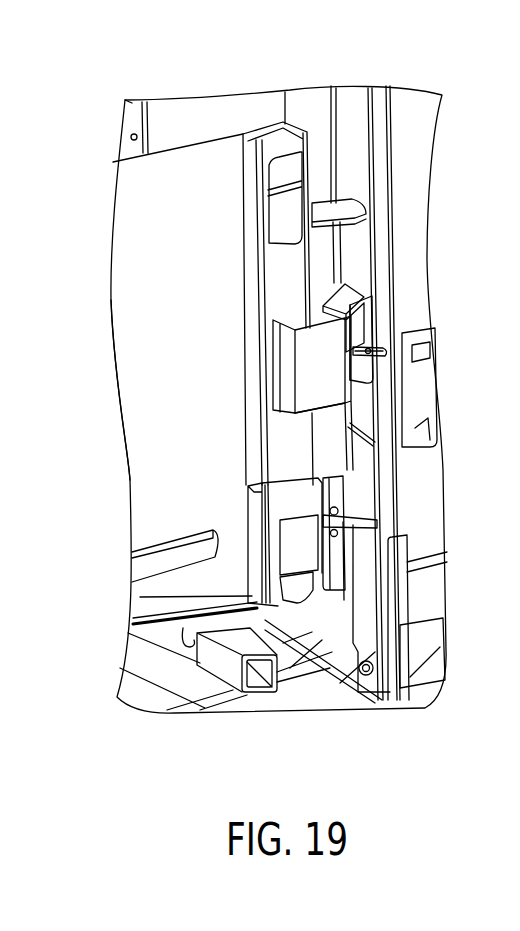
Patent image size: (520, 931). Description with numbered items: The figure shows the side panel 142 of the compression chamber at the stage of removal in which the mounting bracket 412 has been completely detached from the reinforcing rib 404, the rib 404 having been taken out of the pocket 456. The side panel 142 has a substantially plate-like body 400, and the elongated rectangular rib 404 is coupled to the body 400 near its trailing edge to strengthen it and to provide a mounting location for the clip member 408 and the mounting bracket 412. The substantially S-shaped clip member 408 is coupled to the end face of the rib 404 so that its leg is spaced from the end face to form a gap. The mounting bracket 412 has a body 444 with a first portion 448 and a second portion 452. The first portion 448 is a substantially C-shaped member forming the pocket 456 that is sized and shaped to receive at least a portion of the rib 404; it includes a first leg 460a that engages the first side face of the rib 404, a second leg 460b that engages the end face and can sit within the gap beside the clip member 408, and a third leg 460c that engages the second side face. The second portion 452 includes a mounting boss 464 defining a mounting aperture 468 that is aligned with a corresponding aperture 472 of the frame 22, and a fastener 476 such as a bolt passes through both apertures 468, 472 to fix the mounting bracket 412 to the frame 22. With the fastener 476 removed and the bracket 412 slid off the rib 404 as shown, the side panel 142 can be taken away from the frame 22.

The frame 22 is at (415, 186).
The side panel 142 is at (164, 190).
The body 400 is at (140, 222).
The reinforcing rib 404 is at (280, 258).
The clip member 408 is at (286, 164).
The mounting bracket 412 is at (285, 392).
The body 444 is at (273, 338).
The first portion 448 is at (433, 446).
The second portion 452 is at (362, 318).
The pocket 456 is at (286, 312).
The first leg 460a is at (283, 356).
The second leg 460b is at (310, 416).
The third leg 460c is at (360, 299).
The mounting boss 464 is at (392, 341).
The mounting aperture 468 is at (378, 352).
The aperture 472 is at (320, 210).
The fastener 476 is at (388, 540).